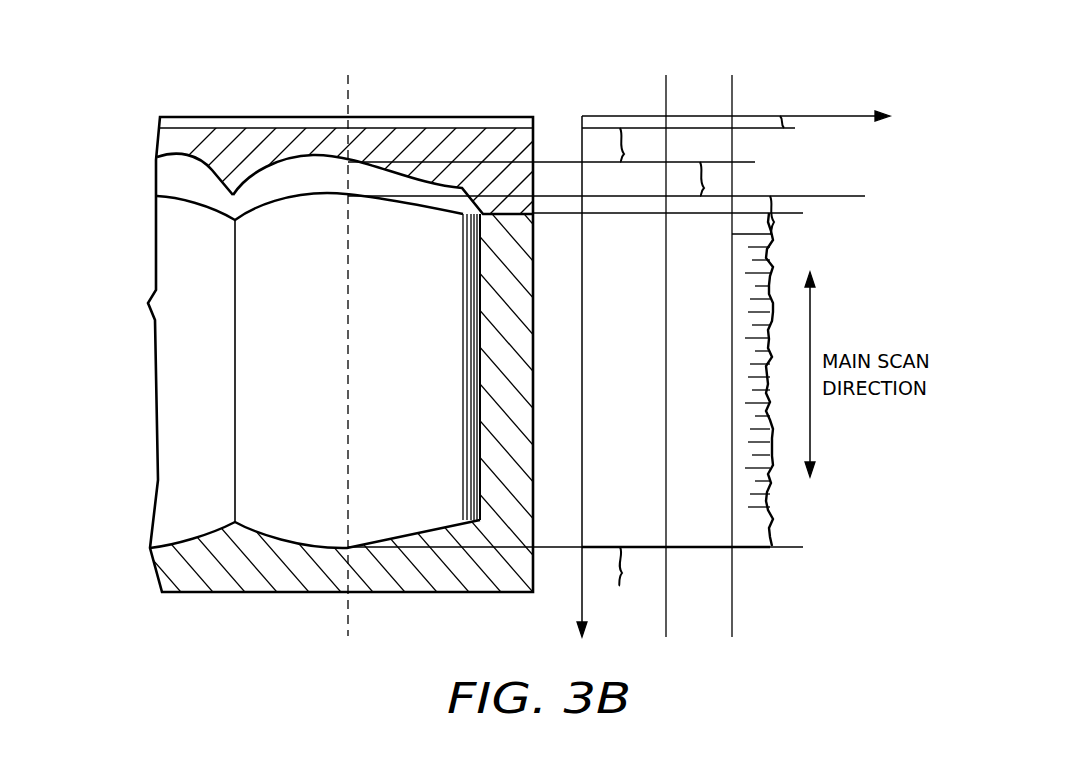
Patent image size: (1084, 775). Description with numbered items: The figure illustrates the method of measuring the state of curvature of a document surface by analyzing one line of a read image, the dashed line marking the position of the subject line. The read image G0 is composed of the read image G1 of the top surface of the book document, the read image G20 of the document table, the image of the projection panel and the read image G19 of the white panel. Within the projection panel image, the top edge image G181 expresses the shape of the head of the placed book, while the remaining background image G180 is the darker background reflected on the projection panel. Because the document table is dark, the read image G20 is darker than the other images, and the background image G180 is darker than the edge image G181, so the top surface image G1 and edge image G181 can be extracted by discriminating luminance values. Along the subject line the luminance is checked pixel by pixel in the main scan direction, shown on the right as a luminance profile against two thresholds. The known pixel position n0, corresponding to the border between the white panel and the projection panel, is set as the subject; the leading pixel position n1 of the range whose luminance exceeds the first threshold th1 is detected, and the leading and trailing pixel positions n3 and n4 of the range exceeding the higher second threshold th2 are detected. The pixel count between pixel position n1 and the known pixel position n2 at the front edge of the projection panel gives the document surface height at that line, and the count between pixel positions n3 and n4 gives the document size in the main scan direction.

The read image G0 is at (481, 118).
The read image of white panel G19 is at (419, 122).
The background image G180 is at (198, 131).
The top edge image G181 is at (297, 157).
The read image of top surface G1 is at (315, 355).
The read image of document table G20 is at (467, 591).
The first threshold th1 is at (667, 343).
The second threshold th2 is at (732, 343).
The known pixel position n0 is at (733, 374).
The pixel position n1 is at (566, 151).
The known pixel position n2 is at (682, 215).
The pixel position n3 is at (620, 185).
The pixel position n4 is at (590, 562).